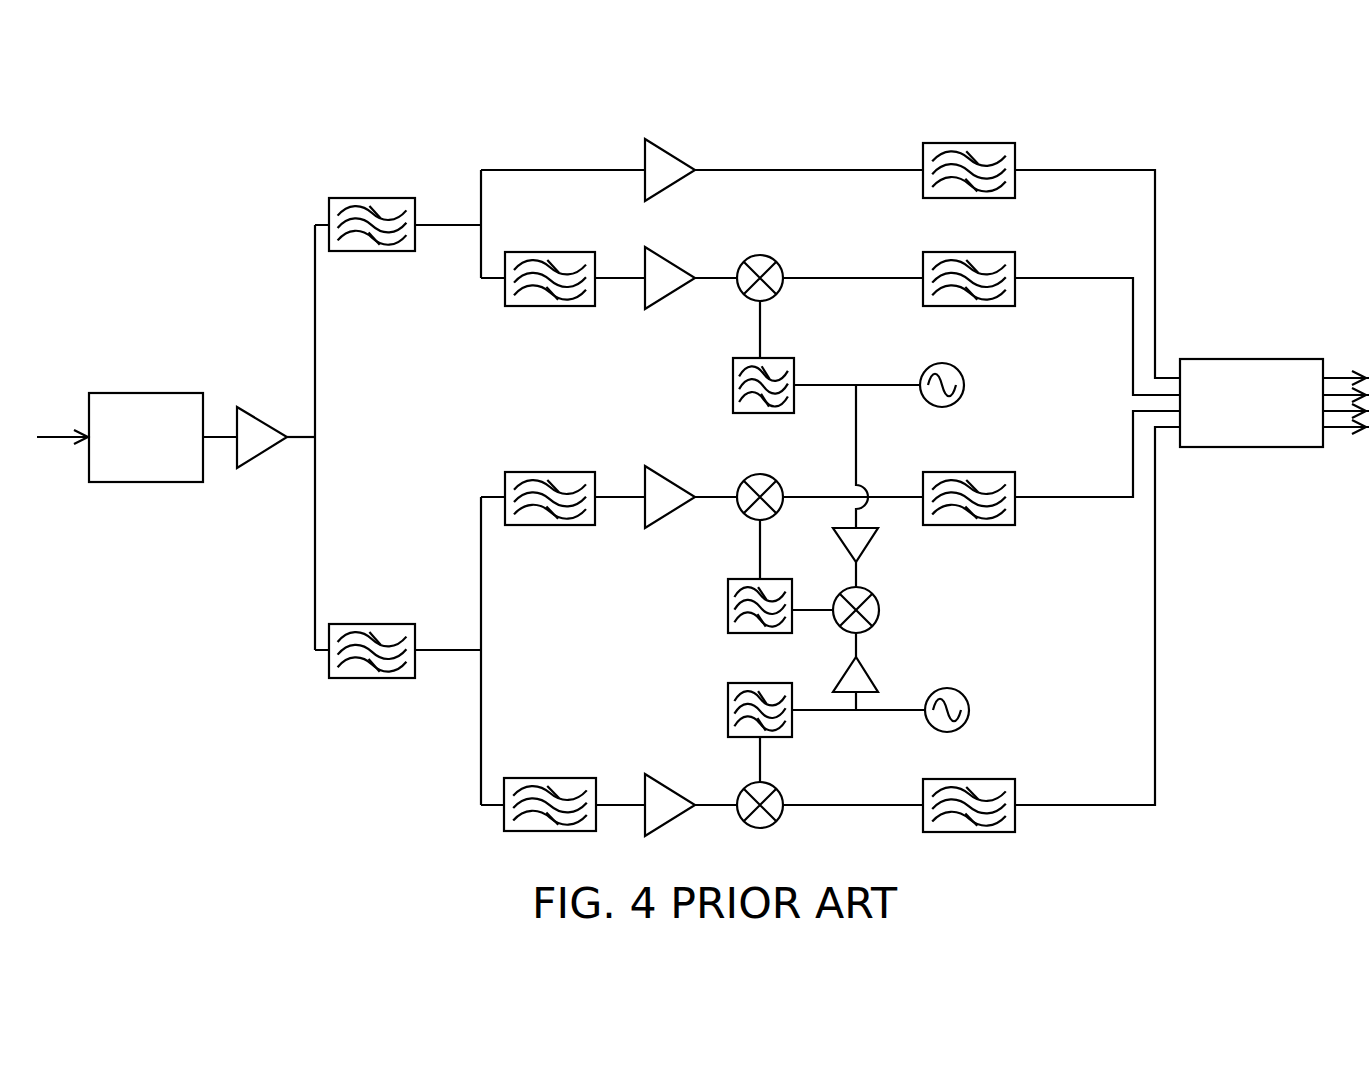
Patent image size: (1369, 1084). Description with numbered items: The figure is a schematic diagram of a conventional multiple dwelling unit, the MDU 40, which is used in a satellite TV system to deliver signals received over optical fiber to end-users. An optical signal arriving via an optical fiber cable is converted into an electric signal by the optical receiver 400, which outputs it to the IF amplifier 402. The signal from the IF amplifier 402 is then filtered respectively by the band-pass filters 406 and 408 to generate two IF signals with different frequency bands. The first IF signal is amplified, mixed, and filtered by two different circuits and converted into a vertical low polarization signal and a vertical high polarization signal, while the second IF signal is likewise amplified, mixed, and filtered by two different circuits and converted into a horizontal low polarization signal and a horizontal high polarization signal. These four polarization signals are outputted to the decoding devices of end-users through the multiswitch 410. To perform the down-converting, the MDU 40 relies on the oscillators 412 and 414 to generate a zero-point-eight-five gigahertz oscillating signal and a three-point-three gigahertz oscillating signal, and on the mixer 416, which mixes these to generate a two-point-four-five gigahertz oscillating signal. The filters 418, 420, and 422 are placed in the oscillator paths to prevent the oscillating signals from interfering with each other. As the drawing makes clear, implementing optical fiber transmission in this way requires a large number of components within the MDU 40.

The MDU 40 is at (1150, 128).
The optical receiver 400 is at (147, 393).
The IF amplifier 402 is at (268, 418).
The band-pass filter 406 is at (372, 251).
The band-pass filter 408 is at (372, 624).
The multiswitch 410 is at (1253, 359).
The oscillator 412 is at (964, 385).
The oscillator 414 is at (969, 710).
The mixer 416 is at (879, 610).
The filter 418 is at (778, 358).
The filter 420 is at (775, 579).
The filter 422 is at (775, 683).